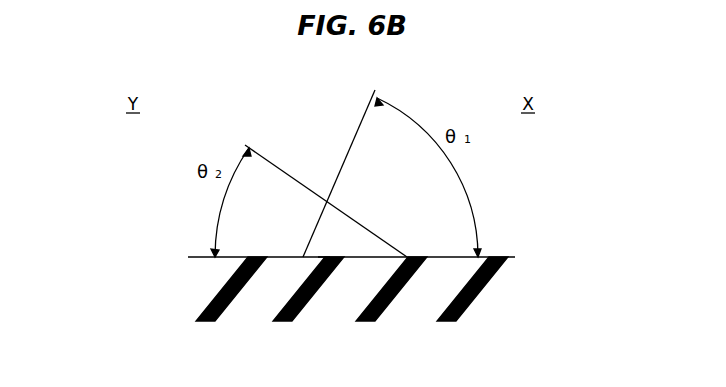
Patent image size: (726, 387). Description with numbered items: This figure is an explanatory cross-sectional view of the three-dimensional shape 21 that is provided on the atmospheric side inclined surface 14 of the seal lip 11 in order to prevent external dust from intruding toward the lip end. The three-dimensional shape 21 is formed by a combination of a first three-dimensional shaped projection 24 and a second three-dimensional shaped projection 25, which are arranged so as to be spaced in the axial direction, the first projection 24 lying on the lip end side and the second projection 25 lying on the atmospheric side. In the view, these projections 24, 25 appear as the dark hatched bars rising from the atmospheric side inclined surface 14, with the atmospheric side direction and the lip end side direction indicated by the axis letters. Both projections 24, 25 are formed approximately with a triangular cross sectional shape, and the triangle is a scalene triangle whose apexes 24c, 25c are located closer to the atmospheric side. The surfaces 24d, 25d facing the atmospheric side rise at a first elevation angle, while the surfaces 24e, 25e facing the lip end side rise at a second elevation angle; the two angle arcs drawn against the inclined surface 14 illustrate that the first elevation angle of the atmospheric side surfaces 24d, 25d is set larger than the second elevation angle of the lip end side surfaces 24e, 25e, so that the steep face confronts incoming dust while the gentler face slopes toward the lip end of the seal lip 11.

The seal lip 11 is at (262, 303).
The atmospheric side inclined surface 14 is at (204, 257).
The three-dimensional shape 21 is at (313, 257).
The first three-dimensional shaped projection 24 is at (406, 314).
The second three-dimensional shaped projection 25 is at (358, 247).
The apex of first three-dimensional shaped projection 24c is at (319, 172).
The apex of second three-dimensional shaped projection 25c is at (328, 201).
The atmospheric side surface of first three-dimensional shaped projection 24d is at (222, 227).
The atmospheric side surface of second three-dimensional shaped projection 25d is at (318, 256).
The lip end side surface of first three-dimensional shaped projection 24e is at (403, 201).
The lip end side surface of second three-dimensional shaped projection 25e is at (374, 233).